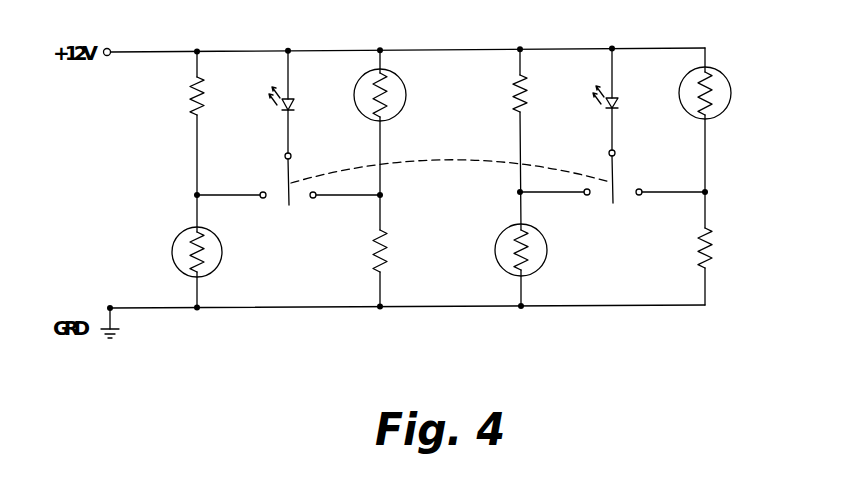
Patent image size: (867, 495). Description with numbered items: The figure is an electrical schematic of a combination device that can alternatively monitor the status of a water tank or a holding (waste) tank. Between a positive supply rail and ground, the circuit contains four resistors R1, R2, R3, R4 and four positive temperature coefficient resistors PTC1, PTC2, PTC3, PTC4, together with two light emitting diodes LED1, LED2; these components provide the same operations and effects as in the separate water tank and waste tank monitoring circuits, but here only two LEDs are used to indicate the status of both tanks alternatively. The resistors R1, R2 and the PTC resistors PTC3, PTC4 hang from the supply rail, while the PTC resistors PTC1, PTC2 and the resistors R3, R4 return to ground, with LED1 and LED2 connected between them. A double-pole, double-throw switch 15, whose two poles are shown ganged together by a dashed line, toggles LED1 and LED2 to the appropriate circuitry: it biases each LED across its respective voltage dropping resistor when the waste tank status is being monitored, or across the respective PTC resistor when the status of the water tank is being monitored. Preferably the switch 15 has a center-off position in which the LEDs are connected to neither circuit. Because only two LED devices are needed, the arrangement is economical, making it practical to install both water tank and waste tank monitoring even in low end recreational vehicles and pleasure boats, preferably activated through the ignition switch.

The double-pole, double-throw switch 15 is at (289, 197).
The resistor R1 is at (210, 92).
The resistor R2 is at (533, 89).
The resistor R3 is at (395, 249).
The resistor R4 is at (721, 245).
The PTC resistor PTC1 is at (222, 257).
The PTC resistor PTC2 is at (546, 255).
The PTC resistor PTC3 is at (400, 103).
The PTC resistor PTC4 is at (727, 102).
The light emitting diode LED1 is at (266, 114).
The light emitting diode LED2 is at (590, 113).